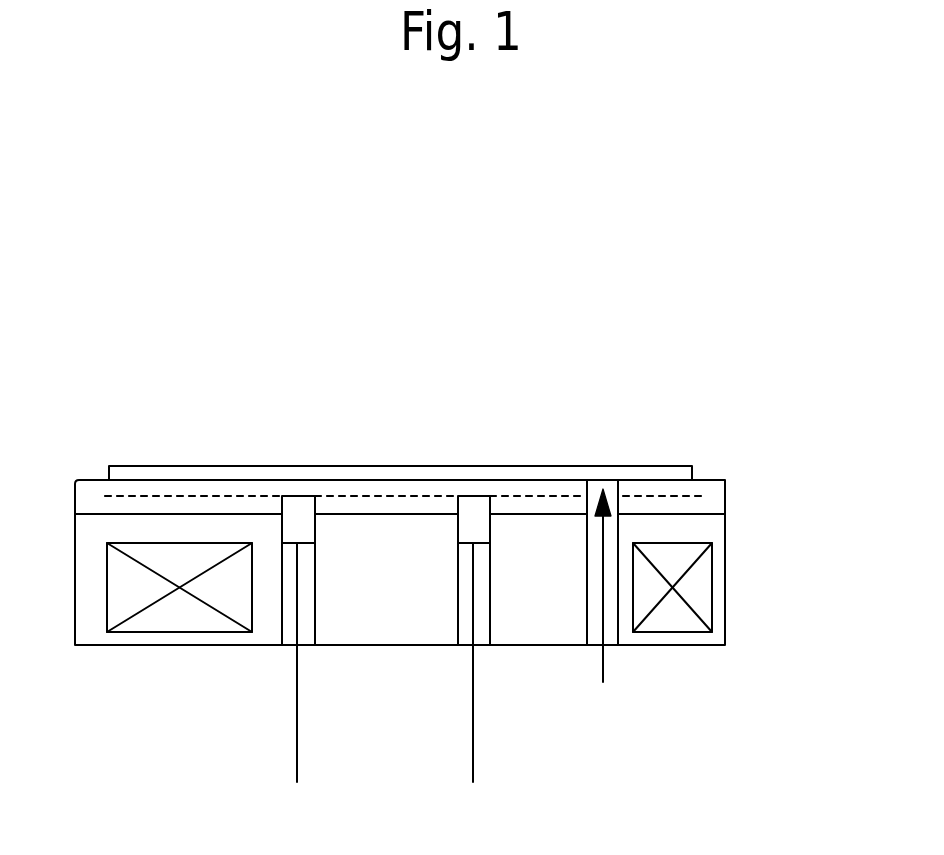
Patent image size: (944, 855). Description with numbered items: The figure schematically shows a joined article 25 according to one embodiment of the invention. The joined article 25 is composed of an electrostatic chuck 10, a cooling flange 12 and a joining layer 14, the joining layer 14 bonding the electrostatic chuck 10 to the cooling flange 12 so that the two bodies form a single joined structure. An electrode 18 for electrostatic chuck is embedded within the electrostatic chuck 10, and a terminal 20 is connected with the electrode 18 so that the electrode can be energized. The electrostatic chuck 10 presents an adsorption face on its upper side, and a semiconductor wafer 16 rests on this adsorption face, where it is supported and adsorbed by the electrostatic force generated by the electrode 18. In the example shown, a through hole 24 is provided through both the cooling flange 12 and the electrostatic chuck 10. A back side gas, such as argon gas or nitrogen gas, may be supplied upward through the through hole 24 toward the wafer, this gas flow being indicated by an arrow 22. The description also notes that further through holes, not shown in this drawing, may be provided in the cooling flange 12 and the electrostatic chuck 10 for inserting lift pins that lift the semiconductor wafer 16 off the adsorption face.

The electrostatic chuck 10 is at (725, 494).
The cooling flange 12 is at (725, 593).
The joining layer 14 is at (82, 518).
The semiconductor wafer 16 is at (667, 468).
The electrode for electrostatic chuck 18 is at (272, 497).
The terminal 20 is at (458, 530).
The arrow 22 is at (598, 672).
The through hole 24 is at (612, 638).
The joined article 25 is at (463, 562).